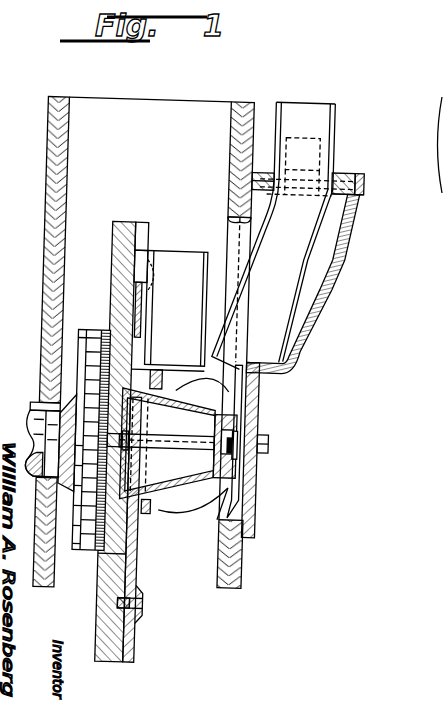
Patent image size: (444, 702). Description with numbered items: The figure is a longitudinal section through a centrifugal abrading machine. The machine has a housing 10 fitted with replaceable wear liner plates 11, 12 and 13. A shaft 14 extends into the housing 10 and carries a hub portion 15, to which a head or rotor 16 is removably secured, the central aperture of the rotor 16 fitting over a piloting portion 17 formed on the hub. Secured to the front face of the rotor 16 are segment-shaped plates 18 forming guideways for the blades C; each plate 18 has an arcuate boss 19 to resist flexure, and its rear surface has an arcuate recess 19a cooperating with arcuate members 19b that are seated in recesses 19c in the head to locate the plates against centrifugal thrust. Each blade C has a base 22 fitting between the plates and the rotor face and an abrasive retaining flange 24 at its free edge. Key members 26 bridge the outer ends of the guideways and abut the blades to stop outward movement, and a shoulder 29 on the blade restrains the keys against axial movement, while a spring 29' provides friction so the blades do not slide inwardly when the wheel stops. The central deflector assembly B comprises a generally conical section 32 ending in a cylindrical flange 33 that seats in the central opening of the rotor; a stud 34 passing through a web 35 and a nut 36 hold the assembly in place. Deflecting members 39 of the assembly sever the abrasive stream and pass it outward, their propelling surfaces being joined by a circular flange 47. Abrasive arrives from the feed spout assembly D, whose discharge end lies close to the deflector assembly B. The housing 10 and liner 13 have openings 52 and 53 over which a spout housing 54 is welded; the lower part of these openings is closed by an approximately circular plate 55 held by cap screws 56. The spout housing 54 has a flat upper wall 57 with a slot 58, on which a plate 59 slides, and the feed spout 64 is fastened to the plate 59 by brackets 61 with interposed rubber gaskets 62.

The housing 10 is at (147, 329).
The wear liner plate 11 is at (62, 174).
The wear liner plate 12 is at (150, 139).
The wear liner plate 13 is at (225, 128).
The shaft 14 is at (36, 408).
The hub portion 15 is at (89, 334).
The rotor 16 is at (110, 268).
The piloting portion 17 is at (112, 445).
The segment-shaped plate 18 is at (136, 662).
The arcuate boss 19 is at (128, 605).
The arcuate recess 19a is at (150, 618).
The arcuate member 19b is at (150, 600).
The recess 19c is at (125, 606).
The blade base 22 is at (168, 338).
The abrasive retaining flange 24 is at (202, 290).
The key member 26 is at (140, 237).
The shoulder 29 is at (162, 257).
The spring 29' is at (162, 299).
The conical section 32 is at (178, 485).
The cylindrical flange 33 is at (150, 470).
The stud 34 is at (160, 436).
The web 35 is at (218, 425).
The nut 36 is at (227, 452).
The deflecting member 39 is at (200, 512).
The circular flange 47 is at (153, 515).
The housing opening 52 is at (236, 225).
The liner opening 53 is at (228, 214).
The spout housing 54 is at (335, 262).
The circular plate 55 is at (261, 500).
The cap screw 56 is at (271, 443).
The flat upper wall 57 is at (360, 188).
The slot 58 is at (332, 192).
The sliding plate 59 is at (338, 171).
The bracket 61 is at (298, 150).
The rubber gasket 62 is at (262, 172).
The feed spout 64 is at (296, 239).
The deflector assembly B is at (243, 432).
The blade C is at (181, 324).
The feed spout assembly D is at (286, 315).